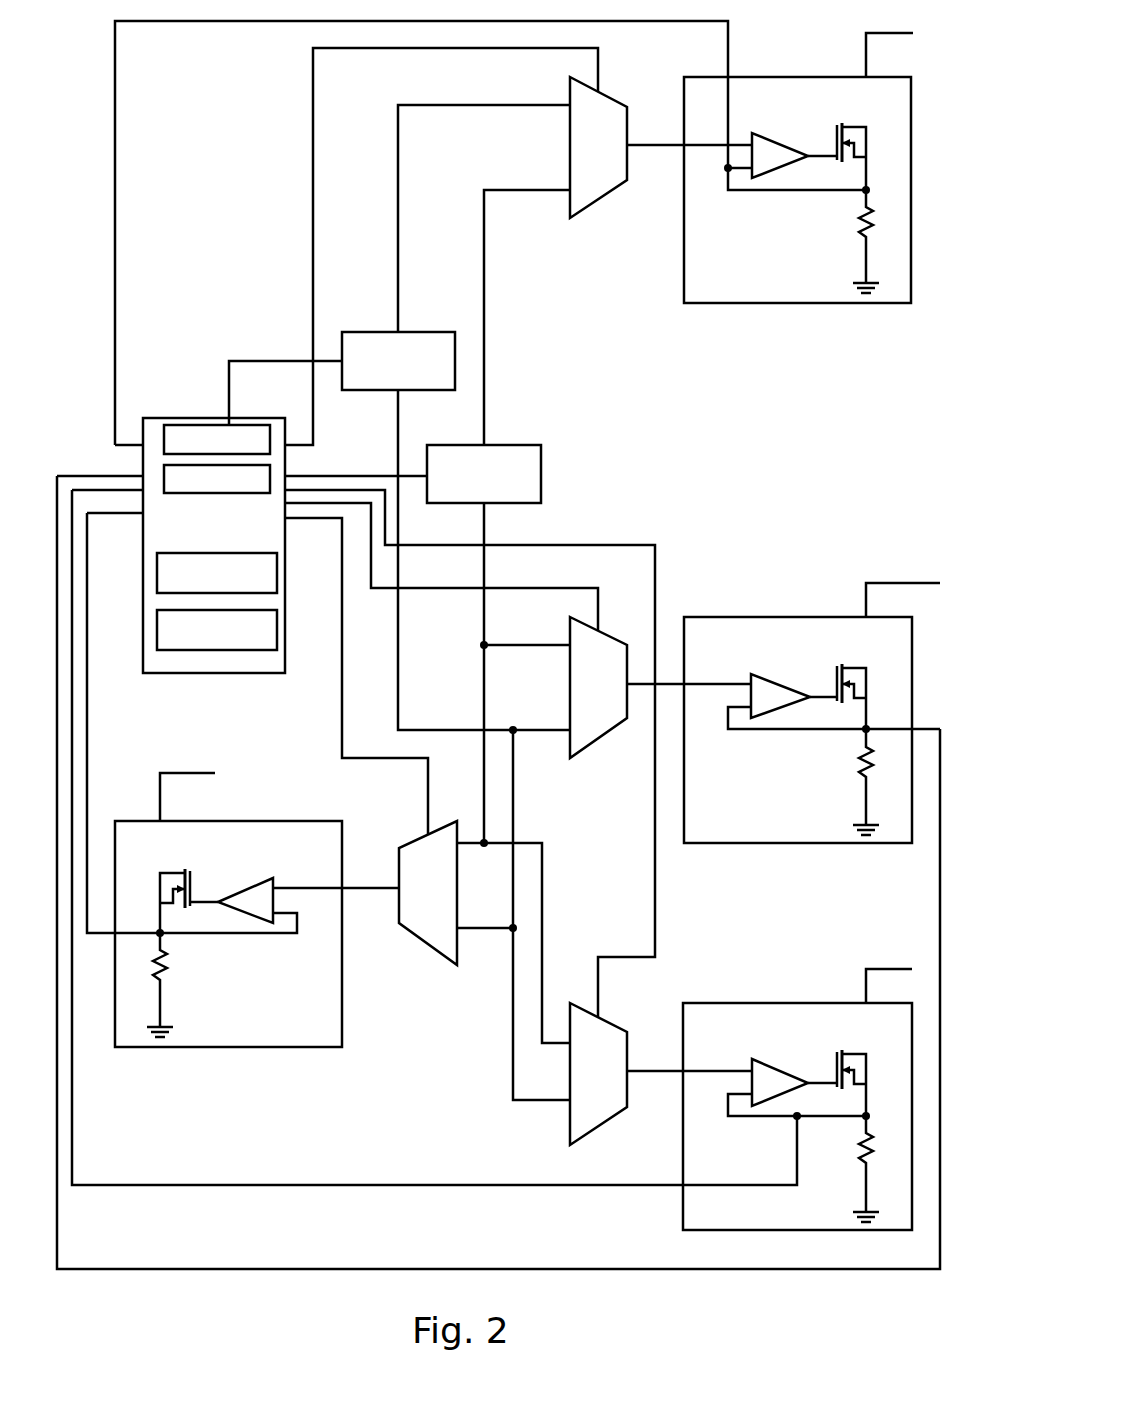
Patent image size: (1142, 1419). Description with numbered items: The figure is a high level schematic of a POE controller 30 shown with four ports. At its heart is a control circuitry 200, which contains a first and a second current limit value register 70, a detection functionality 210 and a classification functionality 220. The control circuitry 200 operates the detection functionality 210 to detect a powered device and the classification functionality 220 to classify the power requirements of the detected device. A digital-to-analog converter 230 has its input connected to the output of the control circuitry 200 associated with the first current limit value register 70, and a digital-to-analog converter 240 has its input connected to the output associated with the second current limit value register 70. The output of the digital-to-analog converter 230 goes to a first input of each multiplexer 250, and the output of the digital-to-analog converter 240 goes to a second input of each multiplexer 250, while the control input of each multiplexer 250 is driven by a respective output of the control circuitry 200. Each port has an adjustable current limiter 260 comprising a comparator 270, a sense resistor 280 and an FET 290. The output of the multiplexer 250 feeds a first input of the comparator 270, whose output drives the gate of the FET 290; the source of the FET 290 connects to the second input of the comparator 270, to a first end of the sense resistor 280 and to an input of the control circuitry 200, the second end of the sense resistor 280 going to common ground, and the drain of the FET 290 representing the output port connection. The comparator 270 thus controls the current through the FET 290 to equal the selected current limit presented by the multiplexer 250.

The POE controller 30 is at (83, 63).
The current limit value register 70 is at (192, 424).
The control circuitry 200 is at (243, 678).
The detection functionality 210 is at (157, 624).
The classification functionality 220 is at (157, 570).
The digital-to-analog converter 230 is at (541, 473).
The digital-to-analog converter 240 is at (422, 330).
The multiplexer 250 is at (613, 192).
The adjustable current limiter 260 is at (773, 76).
The comparator 270 is at (773, 140).
The sense resistor 280 is at (860, 218).
The FET 290 is at (857, 135).